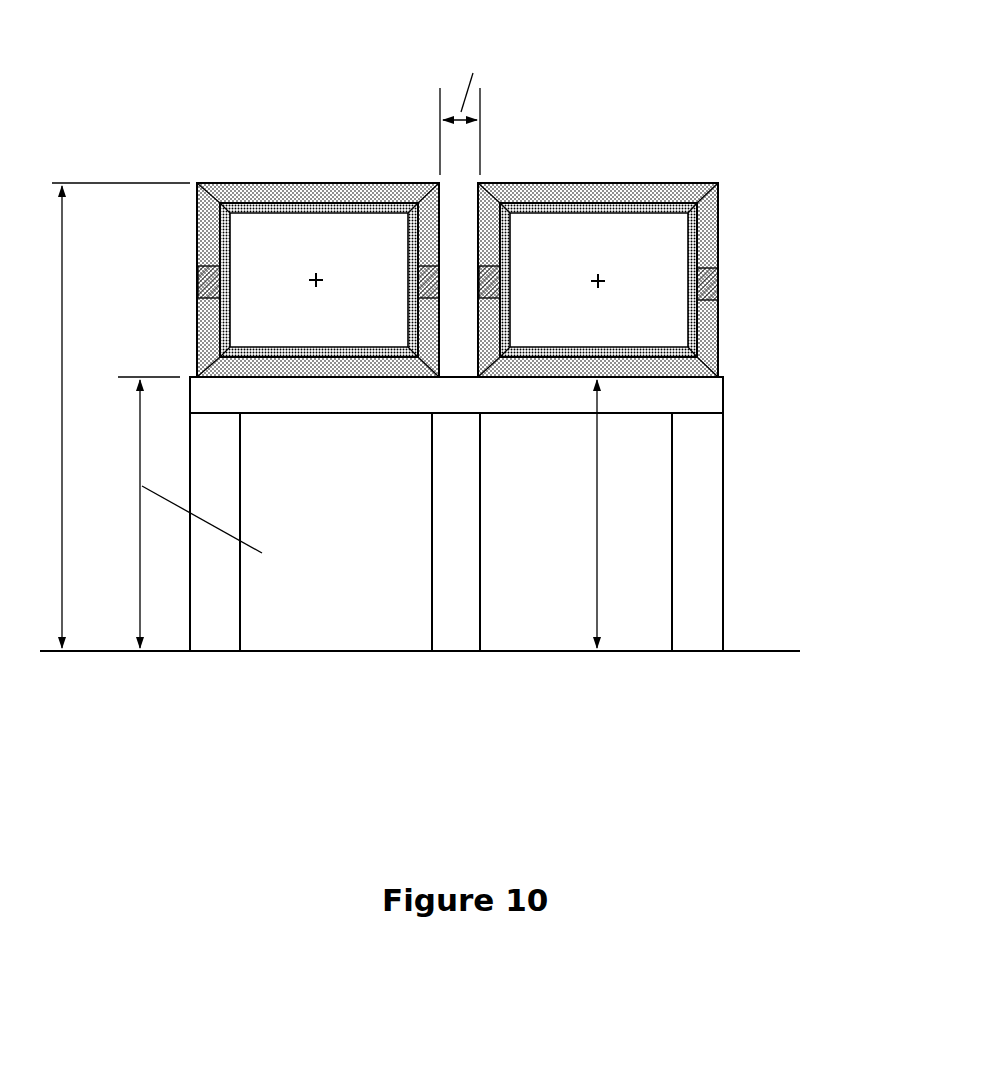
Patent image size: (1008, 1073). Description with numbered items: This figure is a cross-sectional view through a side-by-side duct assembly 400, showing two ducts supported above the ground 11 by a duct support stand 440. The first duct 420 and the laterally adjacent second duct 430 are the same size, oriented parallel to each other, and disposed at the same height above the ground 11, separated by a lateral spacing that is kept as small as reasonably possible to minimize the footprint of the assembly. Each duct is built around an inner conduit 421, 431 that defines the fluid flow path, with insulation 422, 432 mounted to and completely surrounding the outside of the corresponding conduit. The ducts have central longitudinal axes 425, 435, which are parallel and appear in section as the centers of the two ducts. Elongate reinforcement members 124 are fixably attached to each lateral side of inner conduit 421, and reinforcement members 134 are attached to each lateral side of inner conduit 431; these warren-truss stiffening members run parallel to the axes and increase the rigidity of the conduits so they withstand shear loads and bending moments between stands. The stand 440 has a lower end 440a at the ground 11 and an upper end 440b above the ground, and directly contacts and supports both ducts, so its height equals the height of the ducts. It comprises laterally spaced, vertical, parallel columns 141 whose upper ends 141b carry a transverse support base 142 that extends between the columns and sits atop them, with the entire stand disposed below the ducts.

The duct assembly 400 is at (188, 100).
The second duct 430 is at (312, 168).
The insulation 432 is at (257, 185).
The inner conduit 431 is at (335, 187).
The central or longitudinal axis 435 is at (308, 270).
The reinforcement members 134 is at (204, 282).
The first duct 420 is at (737, 181).
The insulation 422 is at (551, 197).
The inner conduit 421 is at (622, 205).
The central or longitudinal axis 425 is at (591, 274).
The reinforcement members 124 is at (716, 282).
The duct support stand 440 is at (737, 459).
The upper end of stand 440b is at (726, 384).
The upper end of column 141b is at (715, 427).
The transverse beam or support base 142 is at (323, 400).
The columns or legs 141 is at (692, 527).
The lower end of stand 440a is at (462, 641).
The ground 11 is at (750, 643).